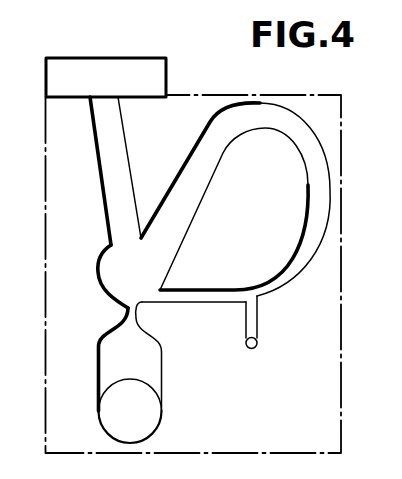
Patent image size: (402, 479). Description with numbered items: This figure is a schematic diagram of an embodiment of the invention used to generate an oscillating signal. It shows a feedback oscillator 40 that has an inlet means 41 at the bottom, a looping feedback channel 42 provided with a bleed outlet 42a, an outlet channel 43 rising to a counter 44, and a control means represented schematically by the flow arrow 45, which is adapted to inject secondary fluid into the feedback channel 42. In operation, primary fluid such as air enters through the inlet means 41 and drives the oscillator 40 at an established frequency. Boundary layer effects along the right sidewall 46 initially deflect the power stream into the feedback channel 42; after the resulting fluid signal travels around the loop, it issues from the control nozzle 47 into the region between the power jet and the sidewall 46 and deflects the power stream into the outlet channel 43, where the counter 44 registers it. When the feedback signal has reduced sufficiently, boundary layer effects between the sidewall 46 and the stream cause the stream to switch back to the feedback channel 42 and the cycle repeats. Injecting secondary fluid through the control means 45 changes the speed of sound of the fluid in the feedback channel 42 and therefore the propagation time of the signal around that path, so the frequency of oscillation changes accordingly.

The feedback oscillator 40 is at (97, 236).
The inlet means 41 is at (96, 358).
The feedback channel 42 is at (259, 199).
The bleed outlet 42a is at (257, 315).
The outlet channel 43 is at (108, 132).
The counter 44 is at (167, 79).
The flow arrow 45 is at (178, 202).
The right sidewall 46 is at (160, 277).
The control nozzle 47 is at (176, 298).